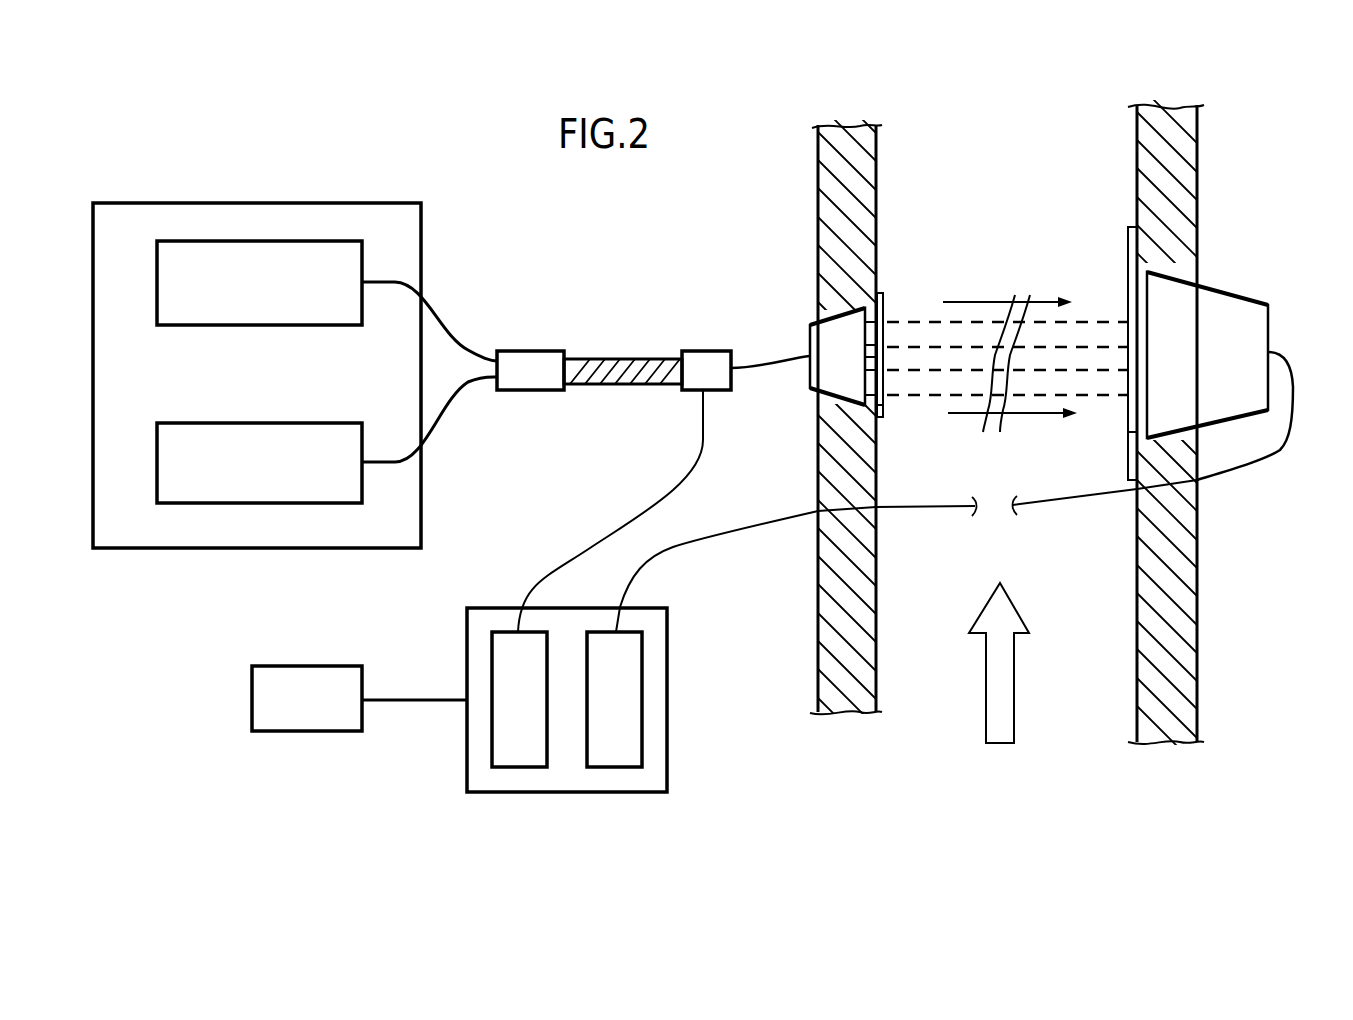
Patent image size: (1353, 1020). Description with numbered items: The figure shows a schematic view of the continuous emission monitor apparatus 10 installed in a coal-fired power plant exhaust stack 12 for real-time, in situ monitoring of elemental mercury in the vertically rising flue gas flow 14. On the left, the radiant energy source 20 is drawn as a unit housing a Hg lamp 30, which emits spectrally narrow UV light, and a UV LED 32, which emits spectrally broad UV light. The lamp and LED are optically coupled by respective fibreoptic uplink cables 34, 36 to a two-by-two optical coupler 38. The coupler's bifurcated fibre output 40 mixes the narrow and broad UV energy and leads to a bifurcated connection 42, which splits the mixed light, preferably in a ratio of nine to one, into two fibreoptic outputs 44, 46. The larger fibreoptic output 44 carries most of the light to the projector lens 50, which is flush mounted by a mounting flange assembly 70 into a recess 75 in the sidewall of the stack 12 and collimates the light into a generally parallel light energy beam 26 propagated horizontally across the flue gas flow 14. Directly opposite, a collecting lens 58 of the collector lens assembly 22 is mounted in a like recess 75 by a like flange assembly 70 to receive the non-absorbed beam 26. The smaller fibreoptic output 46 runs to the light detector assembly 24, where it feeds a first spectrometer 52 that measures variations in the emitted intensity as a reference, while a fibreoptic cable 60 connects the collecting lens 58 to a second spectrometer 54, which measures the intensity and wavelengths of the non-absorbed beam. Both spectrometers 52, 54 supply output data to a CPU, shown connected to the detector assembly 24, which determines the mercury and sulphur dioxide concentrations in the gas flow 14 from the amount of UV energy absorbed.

The continuous emission monitor apparatus 10 is at (367, 193).
The exhaust stack 12 is at (826, 188).
The flue gas flow 14 is at (999, 663).
The radiant energy source 20 is at (222, 218).
The collector lens assembly 22 is at (1297, 346).
The light detector assembly 24 is at (562, 776).
The light energy beam 26 is at (915, 347).
The Hg lamp 30 is at (236, 298).
The UV LED 32 is at (239, 471).
The fibreoptic uplink cable 34 is at (445, 323).
The fibreoptic uplink cable 36 is at (447, 405).
The 2×2 optical coupler 38 is at (540, 365).
The bifurcated fibre output 40 is at (610, 357).
The bifurcated connection 42 is at (700, 362).
The fibreoptic output 44 is at (763, 358).
The fibreoptic output 46 is at (662, 468).
The projector lens 50 is at (870, 356).
The spectrometer 52 is at (505, 742).
The spectrometer 54 is at (625, 742).
The collecting lens 58 is at (1213, 305).
The fibreoptic cable 60 is at (790, 520).
The mounting flange assembly 70 is at (884, 307).
The recess 75 is at (887, 403).